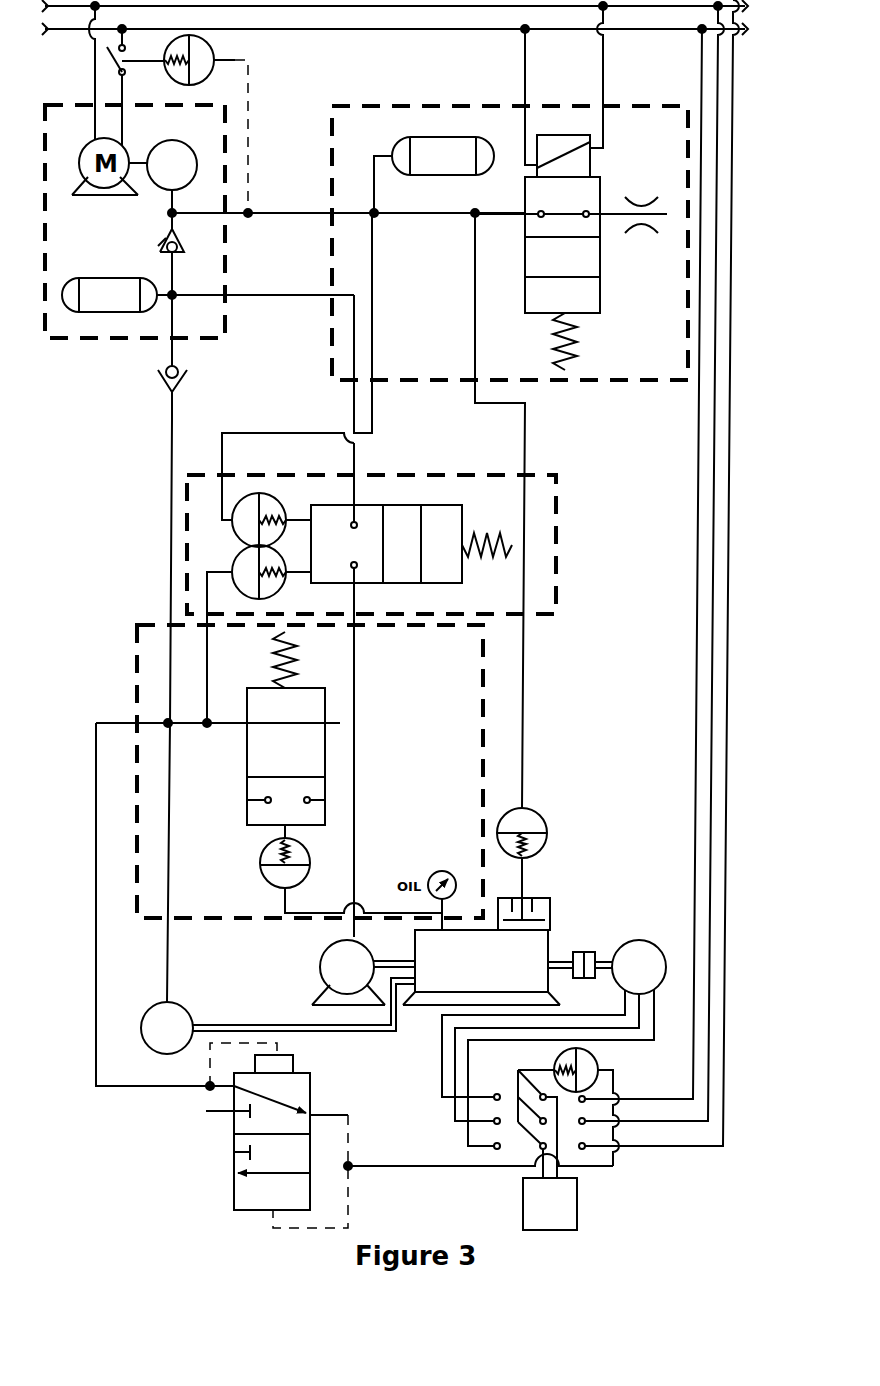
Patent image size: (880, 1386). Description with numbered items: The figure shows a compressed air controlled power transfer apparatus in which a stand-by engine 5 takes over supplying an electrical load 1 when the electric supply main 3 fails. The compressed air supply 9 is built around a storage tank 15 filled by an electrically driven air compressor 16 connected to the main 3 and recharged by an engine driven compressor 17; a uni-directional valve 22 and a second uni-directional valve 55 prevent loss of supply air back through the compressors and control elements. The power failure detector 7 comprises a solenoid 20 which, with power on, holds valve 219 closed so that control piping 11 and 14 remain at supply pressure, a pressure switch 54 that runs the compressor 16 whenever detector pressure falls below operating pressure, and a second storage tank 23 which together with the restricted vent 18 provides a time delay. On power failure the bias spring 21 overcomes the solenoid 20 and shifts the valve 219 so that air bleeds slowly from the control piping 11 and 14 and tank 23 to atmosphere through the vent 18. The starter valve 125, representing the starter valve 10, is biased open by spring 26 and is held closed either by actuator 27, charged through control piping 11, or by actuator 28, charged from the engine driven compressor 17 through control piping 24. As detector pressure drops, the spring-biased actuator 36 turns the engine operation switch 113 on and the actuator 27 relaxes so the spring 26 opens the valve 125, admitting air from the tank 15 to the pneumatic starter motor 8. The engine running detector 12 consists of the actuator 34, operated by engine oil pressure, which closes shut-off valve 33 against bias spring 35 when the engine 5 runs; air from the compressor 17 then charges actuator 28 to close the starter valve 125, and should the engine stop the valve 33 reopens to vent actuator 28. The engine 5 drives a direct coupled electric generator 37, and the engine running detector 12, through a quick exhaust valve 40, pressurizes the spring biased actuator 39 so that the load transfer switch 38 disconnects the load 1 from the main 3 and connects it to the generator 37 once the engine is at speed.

The load 1 is at (580, 1201).
The electric supply main 3 is at (670, 3).
The stand-by engine 5 is at (438, 1004).
The power failure detector 7 is at (402, 106).
The pneumatic starter motor 8 is at (320, 955).
The compressed air supply 9 is at (110, 345).
The starter valve 10 is at (462, 474).
The control piping 11 is at (375, 409).
The engine running detector 12 is at (484, 691).
The control piping 14 is at (528, 432).
The storage tank 15 is at (104, 280).
The electrically driven air compressor 16 is at (182, 141).
The engine driven compressor 17 is at (142, 1018).
The restricted vent 18 is at (640, 206).
The solenoid 20 is at (592, 160).
The bias spring 21 is at (580, 343).
The uni-directional valve 22 is at (160, 243).
The second storage tank 23 is at (428, 138).
The control piping 24 is at (209, 568).
The spring 26 is at (472, 537).
The actuator 27 is at (276, 503).
The actuator 28 is at (283, 591).
The shut-off valve 33 is at (246, 786).
The actuator 34 is at (259, 858).
The bias spring 35 is at (298, 660).
The spring-biased actuator 36 is at (545, 825).
The electric generator 37 is at (646, 941).
The load transfer switch 38 is at (518, 1082).
The spring biased actuator 39 is at (600, 1060).
The quick exhaust valve 40 is at (312, 1078).
The pressure switch 54 is at (216, 52).
The second uni-directional valve 55 is at (182, 380).
The engine operation switch 113 is at (537, 899).
The starter valve 125 is at (370, 505).
The valve 219 is at (603, 297).